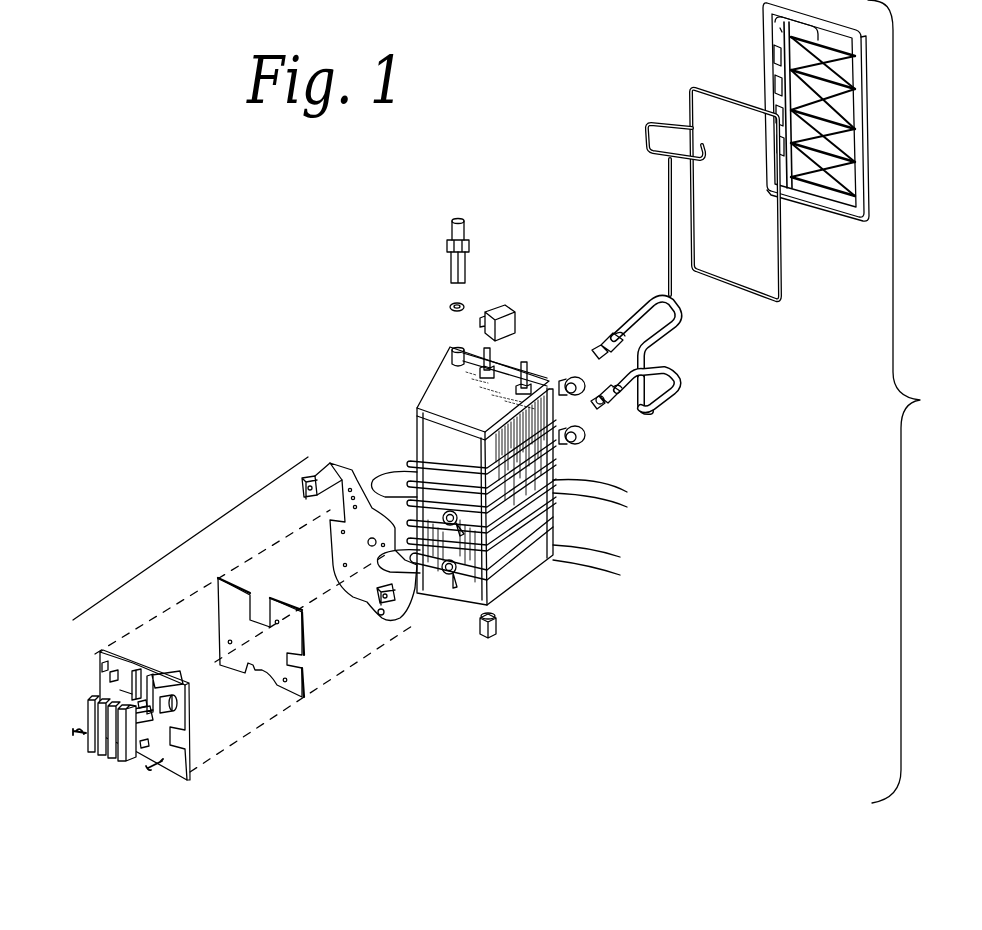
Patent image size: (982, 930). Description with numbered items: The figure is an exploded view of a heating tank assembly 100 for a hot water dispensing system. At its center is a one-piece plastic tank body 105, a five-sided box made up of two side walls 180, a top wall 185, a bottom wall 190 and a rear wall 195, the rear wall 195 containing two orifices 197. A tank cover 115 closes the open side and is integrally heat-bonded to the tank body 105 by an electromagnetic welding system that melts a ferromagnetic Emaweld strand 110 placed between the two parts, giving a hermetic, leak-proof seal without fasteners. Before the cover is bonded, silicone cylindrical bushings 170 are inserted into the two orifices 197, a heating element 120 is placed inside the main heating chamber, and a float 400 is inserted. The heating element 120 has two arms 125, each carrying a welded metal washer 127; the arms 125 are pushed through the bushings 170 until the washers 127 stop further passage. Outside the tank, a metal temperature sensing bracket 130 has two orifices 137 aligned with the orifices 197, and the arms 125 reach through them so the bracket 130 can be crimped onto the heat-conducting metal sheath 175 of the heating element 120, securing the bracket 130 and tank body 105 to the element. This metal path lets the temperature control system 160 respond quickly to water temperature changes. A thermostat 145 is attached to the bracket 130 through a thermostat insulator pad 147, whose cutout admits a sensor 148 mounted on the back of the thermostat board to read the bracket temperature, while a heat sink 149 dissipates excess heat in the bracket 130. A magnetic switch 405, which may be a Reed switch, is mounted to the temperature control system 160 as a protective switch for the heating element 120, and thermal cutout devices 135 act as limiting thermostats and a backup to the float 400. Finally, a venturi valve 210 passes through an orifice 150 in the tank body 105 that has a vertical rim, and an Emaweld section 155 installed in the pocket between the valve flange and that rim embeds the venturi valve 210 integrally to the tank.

The heating tank assembly 100 is at (918, 401).
The tank body 105 is at (518, 583).
The Emaweld strand 110 is at (681, 130).
The tank cover 115 is at (763, 60).
The heating element 120 is at (638, 304).
The arm 125 is at (596, 398).
The metal washer 127 is at (608, 336).
The temperature sensing bracket 130 is at (302, 485).
The thermal cutout device 135 is at (140, 670).
The orifice 137 is at (368, 543).
The thermostat 145 is at (190, 787).
The thermostat insulator pad 147 is at (297, 700).
The sensor 148 is at (140, 748).
The heat sink 149 is at (100, 757).
The orifice 150 is at (452, 348).
The Emaweld section 155 is at (450, 303).
The temperature control system 160 is at (192, 537).
The silicone cylindrical bushing 170 is at (583, 441).
The sheath 175 is at (670, 325).
The side wall 180 is at (627, 507).
The top wall 185 is at (446, 394).
The bottom wall 190 is at (497, 598).
The rear wall 195 is at (465, 587).
The orifice 197 is at (620, 557).
The venturi valve 210 is at (452, 222).
The float 400 is at (497, 305).
The magnetic switch 405 is at (160, 678).